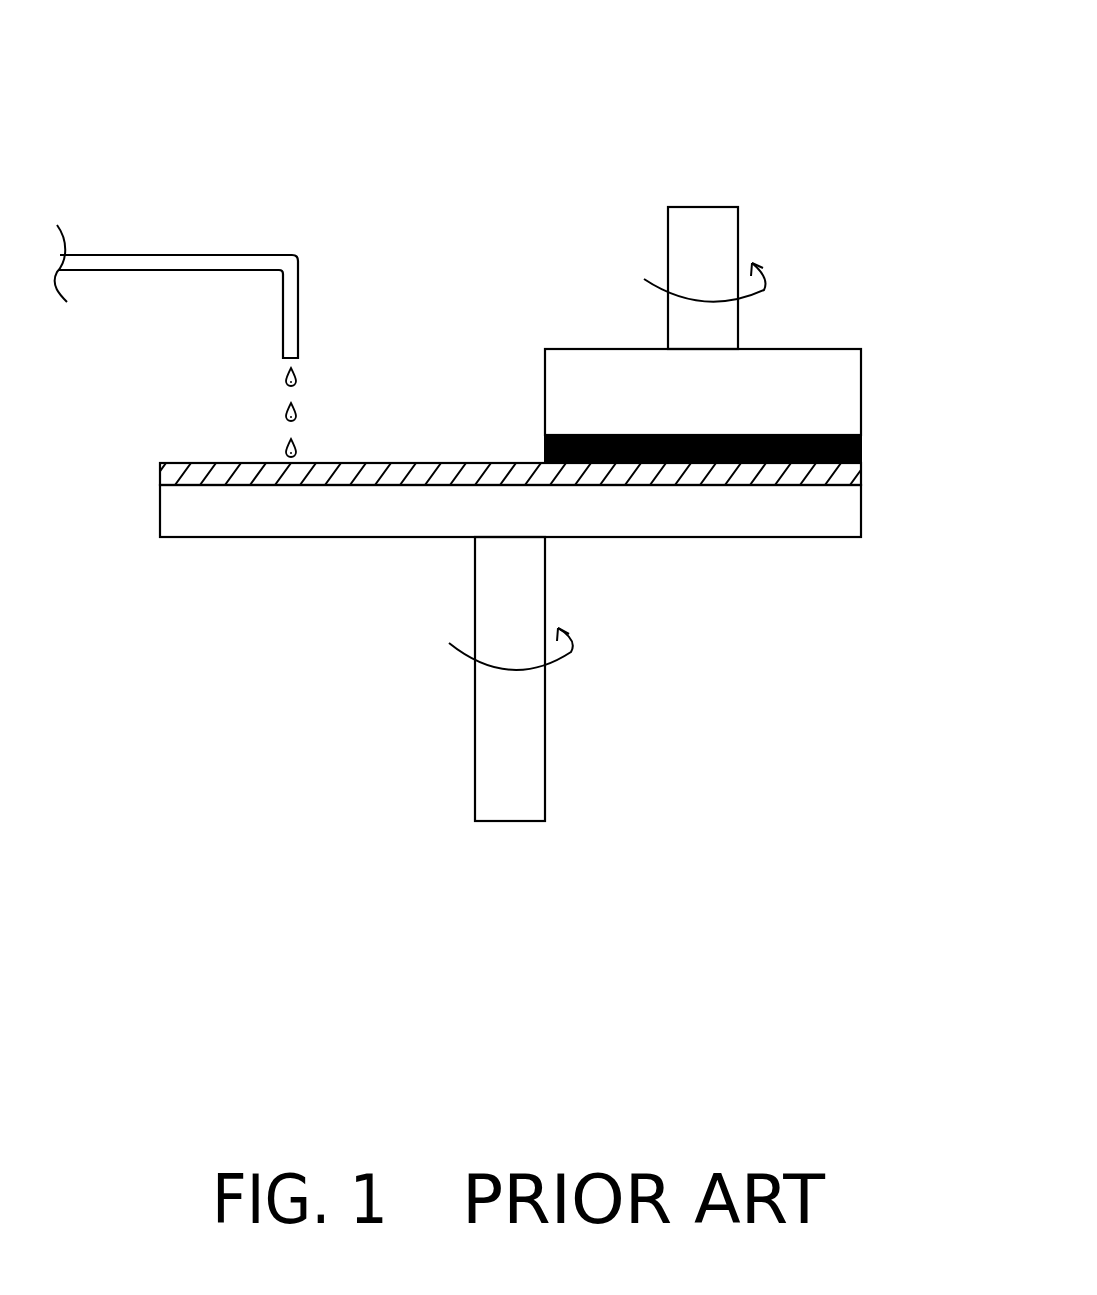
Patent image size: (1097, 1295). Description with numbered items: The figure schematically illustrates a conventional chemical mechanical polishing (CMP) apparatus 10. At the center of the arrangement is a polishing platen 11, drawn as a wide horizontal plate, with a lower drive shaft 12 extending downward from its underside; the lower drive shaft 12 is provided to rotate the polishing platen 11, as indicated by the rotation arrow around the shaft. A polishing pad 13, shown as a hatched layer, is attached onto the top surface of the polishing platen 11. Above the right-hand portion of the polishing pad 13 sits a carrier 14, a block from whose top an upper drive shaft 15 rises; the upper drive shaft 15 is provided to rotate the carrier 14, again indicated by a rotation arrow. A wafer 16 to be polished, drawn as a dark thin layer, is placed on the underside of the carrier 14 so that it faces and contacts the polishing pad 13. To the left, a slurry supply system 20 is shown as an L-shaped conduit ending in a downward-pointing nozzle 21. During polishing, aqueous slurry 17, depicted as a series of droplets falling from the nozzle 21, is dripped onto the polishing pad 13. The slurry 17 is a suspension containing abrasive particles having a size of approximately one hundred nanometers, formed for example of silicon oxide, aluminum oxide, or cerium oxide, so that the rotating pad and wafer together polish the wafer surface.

The CMP apparatus 10 is at (867, 103).
The polishing platen 11 is at (862, 510).
The lower drive shaft 12 is at (546, 762).
The polishing pad 13 is at (160, 472).
The carrier 14 is at (863, 386).
The upper drive shaft 15 is at (697, 207).
The wafer 16 is at (863, 448).
The aqueous slurry 17 is at (298, 412).
The slurry supply system 20 is at (222, 251).
The nozzle 21 is at (299, 304).